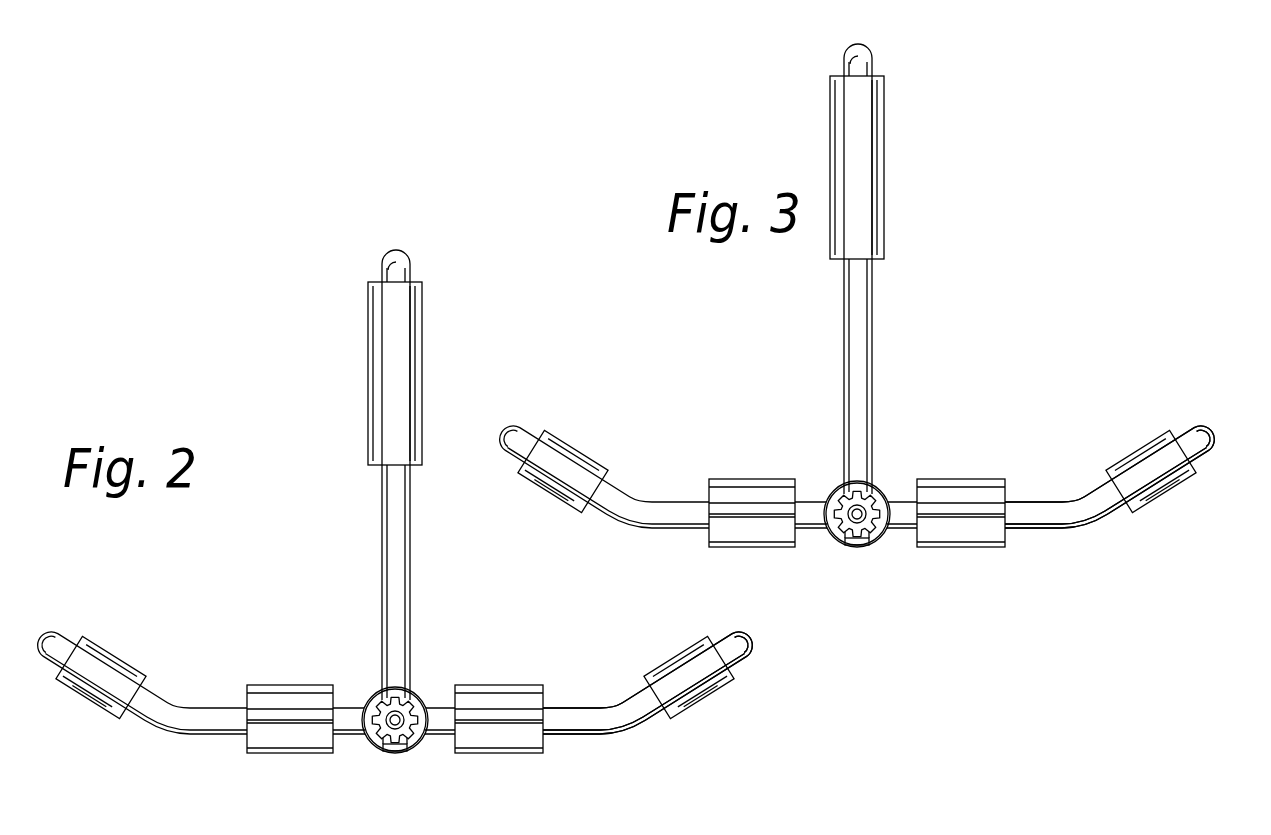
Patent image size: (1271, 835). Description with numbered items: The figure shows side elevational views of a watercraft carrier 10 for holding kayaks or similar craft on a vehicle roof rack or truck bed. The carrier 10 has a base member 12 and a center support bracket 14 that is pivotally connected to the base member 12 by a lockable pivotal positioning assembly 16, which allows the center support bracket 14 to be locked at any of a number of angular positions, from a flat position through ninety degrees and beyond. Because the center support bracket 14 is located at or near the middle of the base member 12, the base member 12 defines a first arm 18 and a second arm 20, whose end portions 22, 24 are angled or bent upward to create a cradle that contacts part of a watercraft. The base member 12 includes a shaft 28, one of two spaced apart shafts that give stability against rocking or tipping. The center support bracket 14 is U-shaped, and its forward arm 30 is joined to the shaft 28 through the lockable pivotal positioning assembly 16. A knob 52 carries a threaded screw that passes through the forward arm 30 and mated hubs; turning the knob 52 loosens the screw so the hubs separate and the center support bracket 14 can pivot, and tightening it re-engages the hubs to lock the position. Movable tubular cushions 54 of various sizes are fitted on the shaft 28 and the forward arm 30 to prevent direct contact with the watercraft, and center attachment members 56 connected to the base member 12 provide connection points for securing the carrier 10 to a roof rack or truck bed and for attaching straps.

In FIG. 2, the watercraft carrier 10 is at (247, 405).
In FIG. 3, the watercraft carrier 10 is at (572, 441).
In FIG. 2, the base member 12 is at (336, 584).
In FIG. 3, the base member 12 is at (857, 466).
In FIG. 2, the center support bracket 14 is at (432, 262).
In FIG. 3, the center support bracket 14 is at (896, 46).
In FIG. 2, the lockable pivotal positioning assembly 16 is at (380, 760).
In FIG. 3, the lockable pivotal positioning assembly 16 is at (833, 571).
In FIG. 2, the first arm 18 is at (611, 664).
In FIG. 3, the first arm 18 is at (1109, 465).
In FIG. 2, the second arm 20 is at (124, 651).
In FIG. 3, the second arm 20 is at (577, 449).
In FIG. 2, the end portion 22 is at (660, 722).
In FIG. 3, the end portion 22 is at (1109, 495).
In FIG. 2, the end portion 24 is at (158, 730).
In FIG. 3, the end portion 24 is at (604, 487).
In FIG. 2, the shaft 28 is at (443, 745).
In FIG. 3, the shaft 28 is at (856, 548).
In FIG. 2, the forward arm 30 is at (410, 527).
In FIG. 3, the forward arm 30 is at (892, 278).
In FIG. 2, the knob 52 is at (369, 700).
In FIG. 3, the knob 52 is at (840, 482).
In FIG. 2, the movable tubular cushion 54 is at (422, 388).
In FIG. 3, the movable tubular cushion 54 is at (1013, 294).
In FIG. 2, the center attachment member 56 is at (284, 685).
In FIG. 3, the center attachment member 56 is at (857, 480).